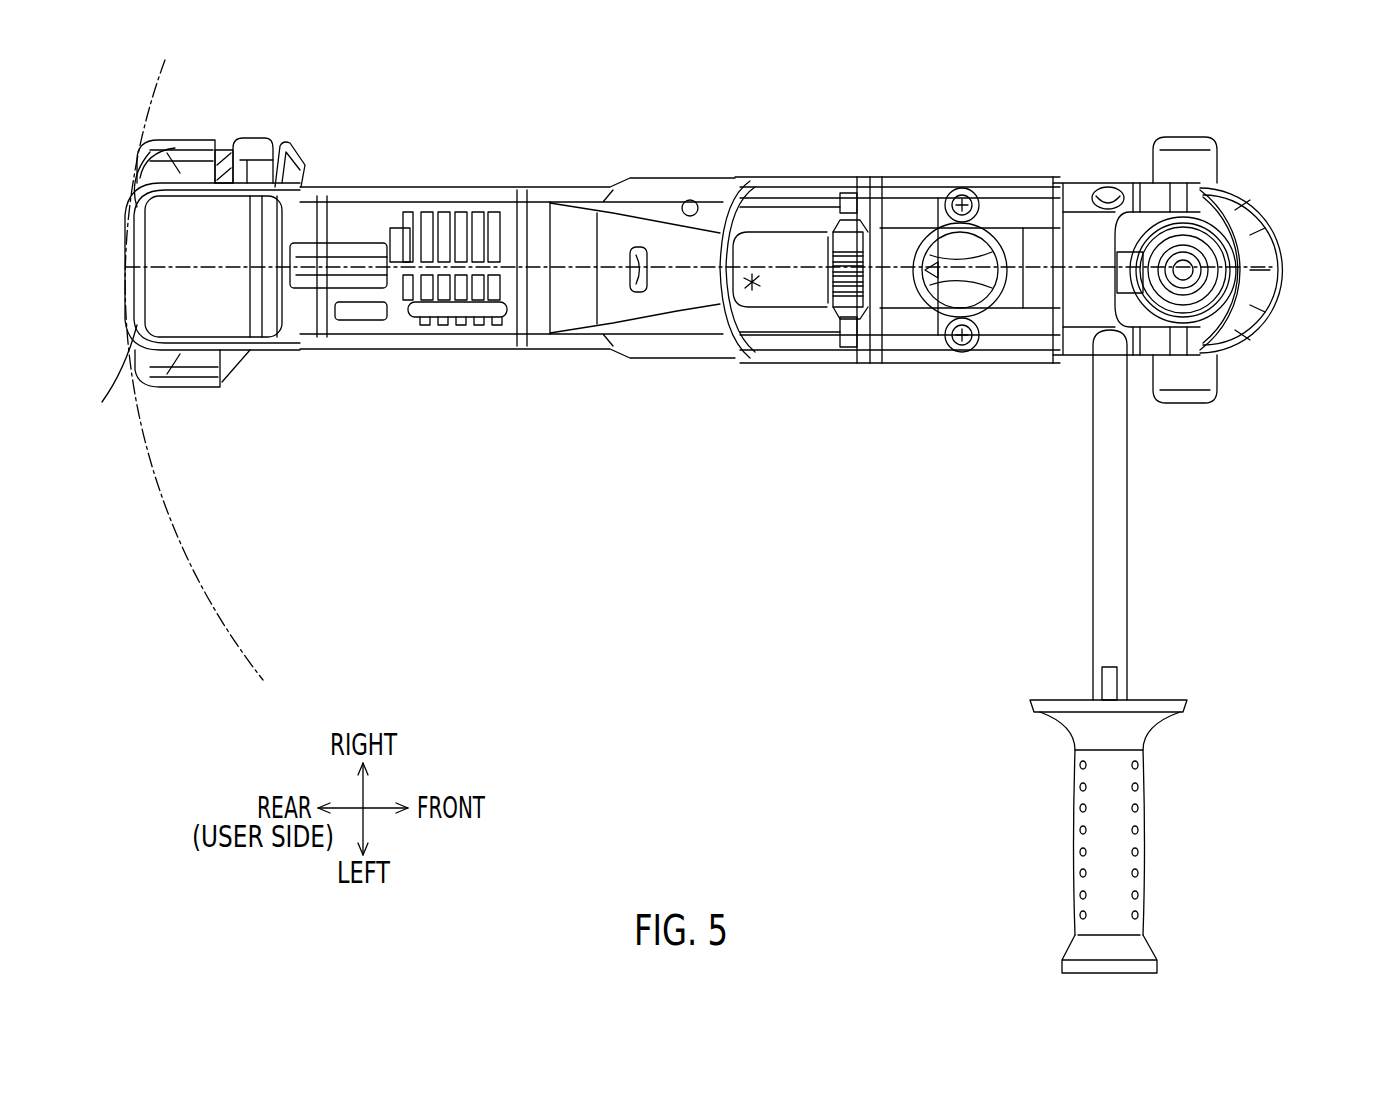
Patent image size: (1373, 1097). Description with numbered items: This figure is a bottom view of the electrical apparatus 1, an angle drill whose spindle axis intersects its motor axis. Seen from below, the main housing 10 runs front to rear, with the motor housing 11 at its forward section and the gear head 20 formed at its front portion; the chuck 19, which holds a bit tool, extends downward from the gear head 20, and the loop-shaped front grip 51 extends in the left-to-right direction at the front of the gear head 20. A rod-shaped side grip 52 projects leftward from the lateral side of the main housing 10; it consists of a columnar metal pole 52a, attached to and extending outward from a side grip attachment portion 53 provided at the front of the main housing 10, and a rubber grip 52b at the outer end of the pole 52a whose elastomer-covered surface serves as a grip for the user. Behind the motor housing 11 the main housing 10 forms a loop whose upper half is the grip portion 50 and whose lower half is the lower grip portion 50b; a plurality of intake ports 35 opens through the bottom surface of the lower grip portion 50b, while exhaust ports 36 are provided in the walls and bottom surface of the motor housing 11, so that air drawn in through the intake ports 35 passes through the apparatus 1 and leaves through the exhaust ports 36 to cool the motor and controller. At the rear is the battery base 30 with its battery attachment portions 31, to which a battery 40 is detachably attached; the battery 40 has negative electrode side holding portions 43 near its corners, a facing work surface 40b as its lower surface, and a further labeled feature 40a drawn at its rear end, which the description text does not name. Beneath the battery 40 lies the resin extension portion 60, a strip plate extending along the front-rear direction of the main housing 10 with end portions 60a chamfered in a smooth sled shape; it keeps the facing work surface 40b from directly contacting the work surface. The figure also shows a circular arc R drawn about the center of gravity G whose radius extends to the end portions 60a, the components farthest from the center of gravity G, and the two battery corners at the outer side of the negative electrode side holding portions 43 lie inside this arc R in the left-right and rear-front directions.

The electrical apparatus 1 is at (515, 578).
The main housing 10 is at (645, 442).
The motor housing 11 is at (825, 275).
The chuck 19 is at (1237, 258).
The gear head 20 is at (1268, 340).
The battery base 30 is at (305, 175).
The battery attachment portion 31 is at (240, 165).
The intake port 35 is at (450, 322).
The exhaust port 36 is at (847, 193).
The battery 40 is at (215, 366).
The battery pack hook 40a is at (265, 145).
The facing work surface 40b is at (172, 150).
The negative electrode side holding portion 43 is at (190, 155).
The grip portion 50 is at (425, 184).
The lower grip portion 50b is at (460, 190).
The front grip 51 is at (1195, 385).
The side grip 52 is at (1162, 600).
The pole 52a is at (1110, 525).
The rubber grip 52b is at (1125, 835).
The side grip attachment portion 53 is at (1098, 186).
The extension portion 60 is at (232, 313).
The end portion 60a is at (136, 163).
The center of gravity G is at (752, 282).
The circular arc R is at (180, 540).